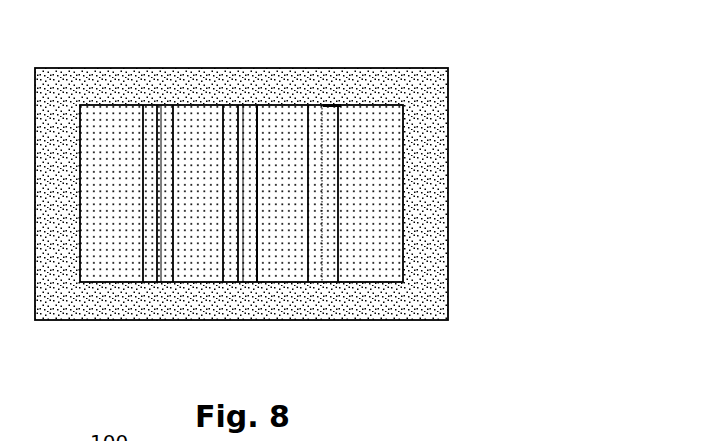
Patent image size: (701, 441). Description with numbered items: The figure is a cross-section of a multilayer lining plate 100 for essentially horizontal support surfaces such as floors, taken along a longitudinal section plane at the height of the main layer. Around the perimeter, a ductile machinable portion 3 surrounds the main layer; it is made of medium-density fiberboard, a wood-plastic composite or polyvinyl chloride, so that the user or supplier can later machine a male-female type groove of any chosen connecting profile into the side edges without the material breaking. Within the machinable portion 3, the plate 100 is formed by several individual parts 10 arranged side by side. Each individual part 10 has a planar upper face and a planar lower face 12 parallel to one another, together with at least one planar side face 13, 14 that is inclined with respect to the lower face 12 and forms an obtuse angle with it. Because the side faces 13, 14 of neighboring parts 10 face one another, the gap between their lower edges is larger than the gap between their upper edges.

The multilayer lining plate 100 is at (304, 190).
The machinable portion 3 is at (298, 90).
The individual parts 10 is at (122, 128).
The lower face 12 is at (294, 208).
The side face 13 is at (258, 272).
The side face 14 is at (320, 272).